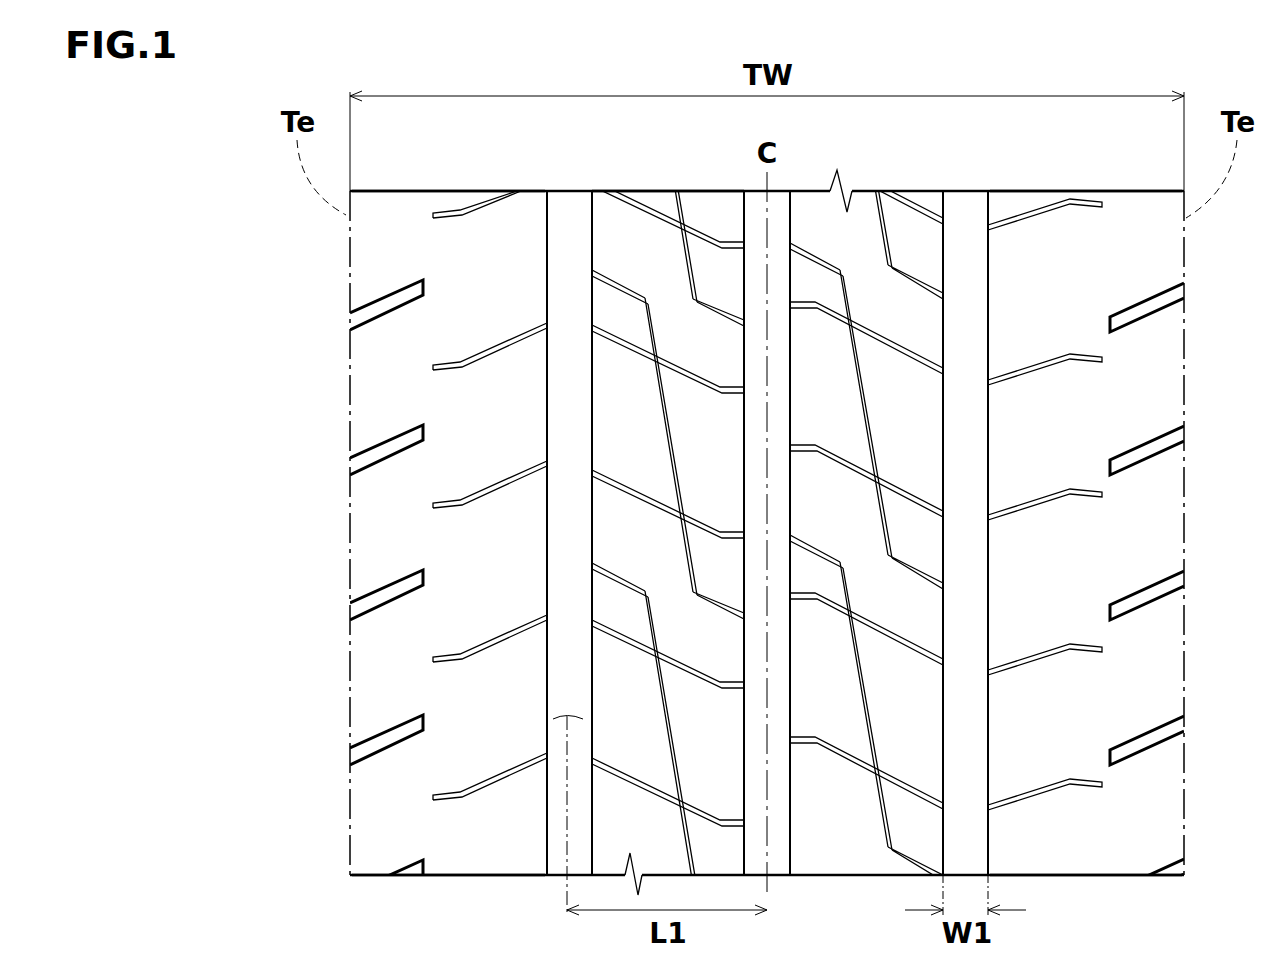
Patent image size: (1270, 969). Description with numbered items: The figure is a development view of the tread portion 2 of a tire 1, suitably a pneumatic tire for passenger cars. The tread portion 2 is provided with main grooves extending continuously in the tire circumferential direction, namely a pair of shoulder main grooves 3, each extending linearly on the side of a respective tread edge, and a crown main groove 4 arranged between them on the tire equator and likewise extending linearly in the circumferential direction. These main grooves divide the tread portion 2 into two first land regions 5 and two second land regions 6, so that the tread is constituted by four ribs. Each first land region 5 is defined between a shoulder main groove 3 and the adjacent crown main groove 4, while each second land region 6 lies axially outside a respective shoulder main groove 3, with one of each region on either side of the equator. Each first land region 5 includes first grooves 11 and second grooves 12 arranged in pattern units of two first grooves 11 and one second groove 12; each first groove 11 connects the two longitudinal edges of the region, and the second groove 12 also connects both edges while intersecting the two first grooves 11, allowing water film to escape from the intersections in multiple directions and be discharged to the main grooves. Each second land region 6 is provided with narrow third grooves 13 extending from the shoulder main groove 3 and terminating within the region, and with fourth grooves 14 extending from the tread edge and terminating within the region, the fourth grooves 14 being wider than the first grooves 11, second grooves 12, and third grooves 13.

The tire 1 is at (1017, 169).
The tread portion 2 is at (616, 178).
The shoulder main groove 3 is at (575, 233).
The crown main groove 4 is at (778, 209).
The first land region 5 is at (661, 233).
The second land region 6 is at (457, 233).
The first groove 11 is at (617, 345).
The second groove 12 is at (665, 428).
The third groove 13 is at (492, 347).
The fourth groove 14 is at (371, 287).